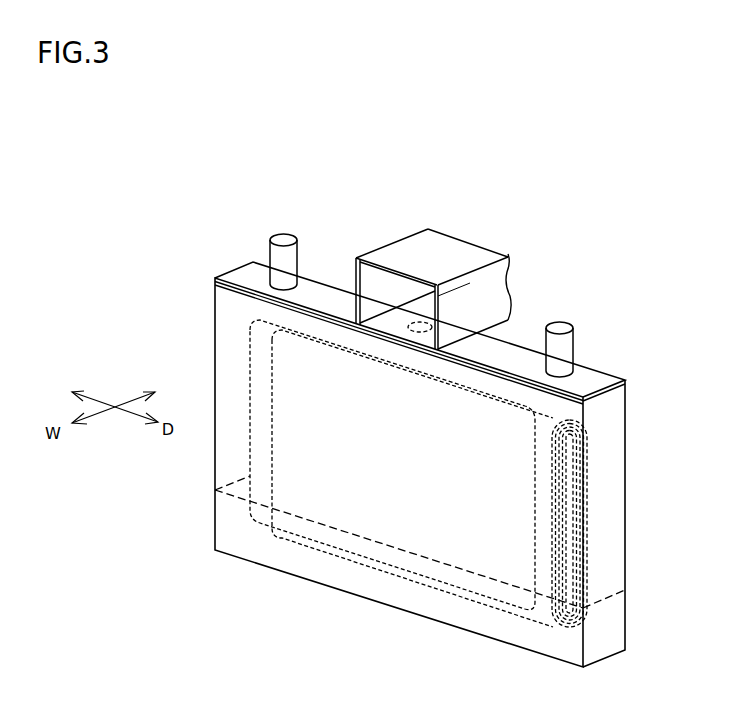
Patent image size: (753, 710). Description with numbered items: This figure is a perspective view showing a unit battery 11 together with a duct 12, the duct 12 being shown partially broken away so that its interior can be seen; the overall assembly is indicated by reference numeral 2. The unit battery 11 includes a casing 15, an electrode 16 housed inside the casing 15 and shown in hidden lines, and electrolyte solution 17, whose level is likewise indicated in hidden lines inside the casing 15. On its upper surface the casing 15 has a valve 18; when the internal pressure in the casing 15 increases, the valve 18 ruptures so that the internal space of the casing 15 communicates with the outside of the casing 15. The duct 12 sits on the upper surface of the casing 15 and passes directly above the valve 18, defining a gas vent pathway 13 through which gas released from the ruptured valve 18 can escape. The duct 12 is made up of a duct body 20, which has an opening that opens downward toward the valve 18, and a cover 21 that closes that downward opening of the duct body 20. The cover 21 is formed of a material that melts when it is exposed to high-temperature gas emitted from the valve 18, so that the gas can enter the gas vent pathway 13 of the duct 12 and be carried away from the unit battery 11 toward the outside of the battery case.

The secondary battery 2 is at (558, 230).
The unit battery 11 is at (608, 367).
The duct 12 is at (442, 175).
The gas vent pathway 13 is at (378, 292).
The casing 15 is at (605, 415).
The electrode 16 is at (328, 553).
The electrolyte solution 17 is at (613, 617).
The valve 18 is at (418, 322).
The duct body 20 is at (493, 283).
The cover 21 is at (425, 303).